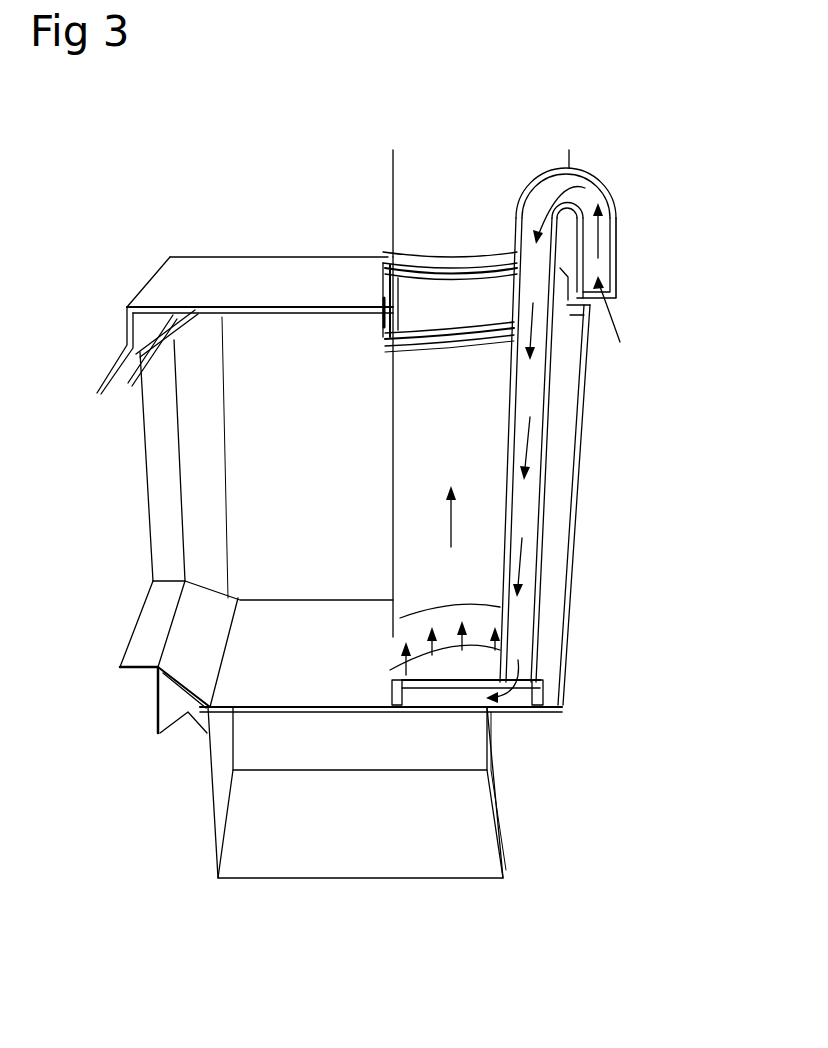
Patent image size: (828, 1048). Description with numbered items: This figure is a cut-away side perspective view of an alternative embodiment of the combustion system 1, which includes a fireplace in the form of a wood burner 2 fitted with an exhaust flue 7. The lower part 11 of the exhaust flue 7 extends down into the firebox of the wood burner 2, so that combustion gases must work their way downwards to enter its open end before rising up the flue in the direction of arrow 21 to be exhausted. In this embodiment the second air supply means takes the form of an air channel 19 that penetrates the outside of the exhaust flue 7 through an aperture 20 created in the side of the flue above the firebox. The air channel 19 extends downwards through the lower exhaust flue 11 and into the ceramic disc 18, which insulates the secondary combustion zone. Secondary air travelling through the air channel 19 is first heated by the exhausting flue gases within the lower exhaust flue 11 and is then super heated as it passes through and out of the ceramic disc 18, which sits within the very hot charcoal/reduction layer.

The combustion system 1 is at (82, 281).
The wood burner 2 is at (292, 278).
The exhaust flue 7 is at (488, 191).
The lower part of the exhaust flue 11 is at (492, 405).
The ceramic disc 18 is at (480, 666).
The air channel 19 is at (525, 512).
The aperture 20 is at (592, 172).
The arrow 21 is at (455, 534).